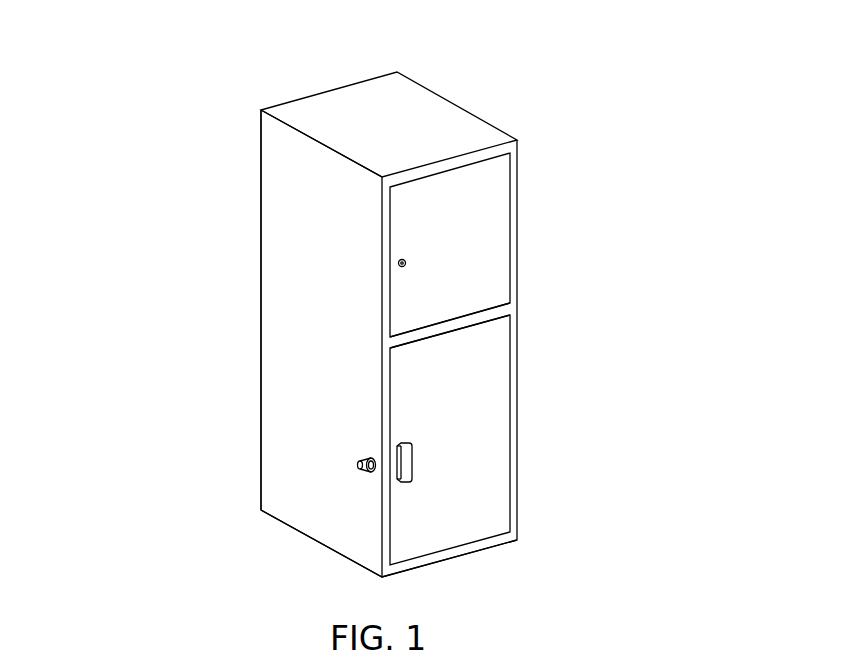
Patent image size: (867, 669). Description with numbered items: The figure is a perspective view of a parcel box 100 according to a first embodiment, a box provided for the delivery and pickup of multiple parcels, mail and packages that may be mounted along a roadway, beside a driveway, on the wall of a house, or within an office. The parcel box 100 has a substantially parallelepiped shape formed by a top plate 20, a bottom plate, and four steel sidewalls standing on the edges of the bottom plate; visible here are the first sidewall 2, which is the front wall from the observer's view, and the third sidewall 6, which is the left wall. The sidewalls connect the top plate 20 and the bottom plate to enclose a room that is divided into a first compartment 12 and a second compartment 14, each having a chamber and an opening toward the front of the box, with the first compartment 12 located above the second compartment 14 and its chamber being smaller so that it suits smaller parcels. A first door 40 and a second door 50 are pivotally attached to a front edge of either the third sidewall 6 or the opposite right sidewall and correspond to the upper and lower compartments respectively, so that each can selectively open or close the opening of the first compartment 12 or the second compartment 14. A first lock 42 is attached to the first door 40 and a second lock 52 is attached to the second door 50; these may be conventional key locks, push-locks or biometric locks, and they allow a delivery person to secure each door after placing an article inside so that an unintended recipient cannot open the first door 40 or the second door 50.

The parcel box 100 is at (150, 109).
The top plate 20 is at (345, 103).
The first compartment 12 is at (270, 222).
The third sidewall 6 is at (317, 332).
The second compartment 14 is at (270, 397).
The first door 40 is at (472, 220).
The first lock 42 is at (407, 263).
The first sidewall 2 is at (480, 317).
The second door 50 is at (477, 460).
The second lock 52 is at (357, 467).